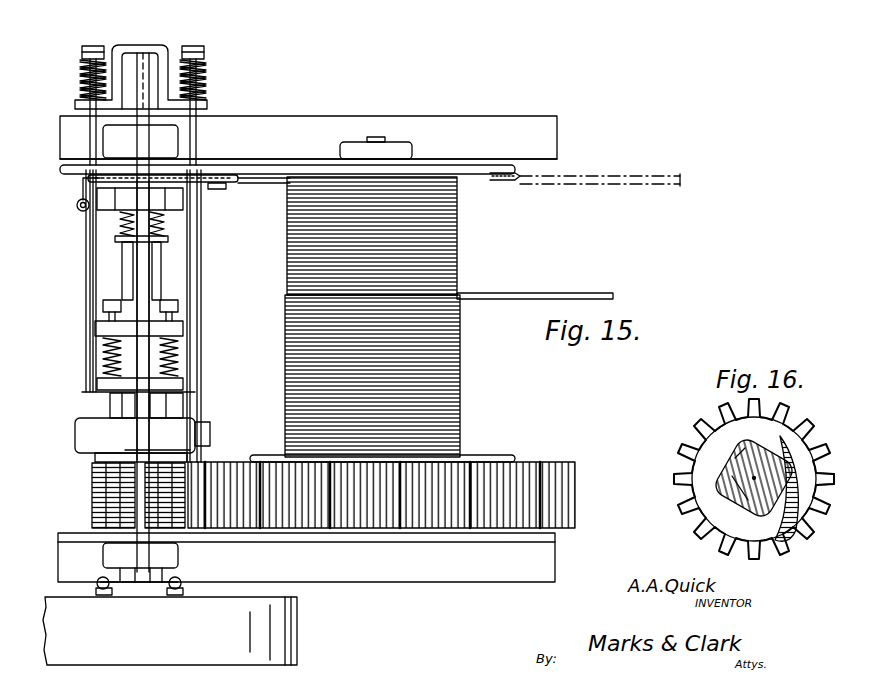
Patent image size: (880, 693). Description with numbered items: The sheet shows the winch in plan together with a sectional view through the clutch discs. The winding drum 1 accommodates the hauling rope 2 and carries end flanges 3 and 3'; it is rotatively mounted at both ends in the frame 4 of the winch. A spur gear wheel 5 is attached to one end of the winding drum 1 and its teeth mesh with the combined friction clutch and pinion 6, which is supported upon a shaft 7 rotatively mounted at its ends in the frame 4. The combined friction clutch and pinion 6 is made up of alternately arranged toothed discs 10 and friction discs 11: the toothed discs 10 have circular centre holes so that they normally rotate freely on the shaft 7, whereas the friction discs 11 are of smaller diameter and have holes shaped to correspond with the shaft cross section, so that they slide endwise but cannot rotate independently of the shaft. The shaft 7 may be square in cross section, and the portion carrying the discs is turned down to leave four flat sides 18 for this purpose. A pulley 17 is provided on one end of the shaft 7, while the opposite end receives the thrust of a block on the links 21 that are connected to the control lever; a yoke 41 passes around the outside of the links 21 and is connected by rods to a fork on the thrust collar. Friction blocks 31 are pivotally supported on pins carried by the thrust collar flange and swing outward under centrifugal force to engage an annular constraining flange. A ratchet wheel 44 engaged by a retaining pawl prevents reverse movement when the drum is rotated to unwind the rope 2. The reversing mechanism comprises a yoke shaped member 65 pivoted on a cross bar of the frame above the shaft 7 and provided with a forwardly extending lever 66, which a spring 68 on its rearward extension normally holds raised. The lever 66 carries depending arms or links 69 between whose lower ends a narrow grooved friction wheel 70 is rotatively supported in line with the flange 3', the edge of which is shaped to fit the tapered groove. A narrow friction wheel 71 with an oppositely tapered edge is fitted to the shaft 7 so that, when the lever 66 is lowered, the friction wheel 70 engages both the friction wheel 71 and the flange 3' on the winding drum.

In FIG. 15, the winding drum 1 is at (448, 249).
In FIG. 15, the hauling rope 2 is at (492, 293).
In FIG. 15, the end flange 3 is at (389, 449).
In FIG. 15, the end flange 3' is at (512, 196).
In FIG. 15, the frame 4 is at (576, 549).
In FIG. 15, the spur gear wheel 5 is at (575, 485).
In FIG. 16, the combined friction clutch and pinion 6 is at (838, 462).
In FIG. 15, the shaft 7 is at (150, 259).
In FIG. 16, the shaft 7 is at (742, 478).
In FIG. 16, the toothed discs 10 is at (786, 438).
In FIG. 16, the friction discs 11 is at (722, 430).
In FIG. 15, the pulley 17 is at (170, 631).
In FIG. 16, the flat sides 18 is at (735, 458).
In FIG. 15, the links 21 is at (140, 72).
In FIG. 15, the friction blocks 31 is at (296, 153).
In FIG. 15, the yoke 41 is at (166, 47).
In FIG. 15, the ratchet wheel 44 is at (104, 226).
In FIG. 15, the yoke shaped member 65 is at (199, 276).
In FIG. 15, the lever 66 is at (640, 191).
In FIG. 15, the spring 68 is at (78, 212).
In FIG. 15, the depending arms or links 69 is at (220, 188).
In FIG. 15, the grooved friction wheel 70 is at (236, 175).
In FIG. 15, the friction wheel 71 is at (140, 176).